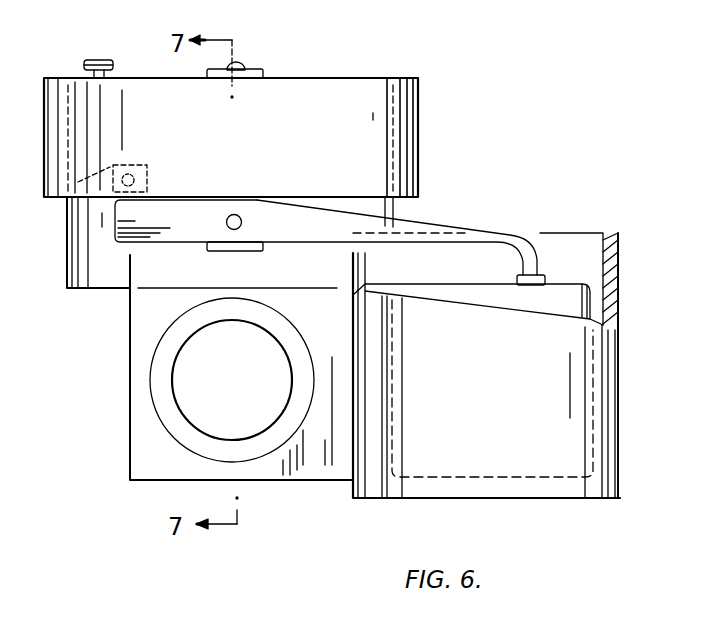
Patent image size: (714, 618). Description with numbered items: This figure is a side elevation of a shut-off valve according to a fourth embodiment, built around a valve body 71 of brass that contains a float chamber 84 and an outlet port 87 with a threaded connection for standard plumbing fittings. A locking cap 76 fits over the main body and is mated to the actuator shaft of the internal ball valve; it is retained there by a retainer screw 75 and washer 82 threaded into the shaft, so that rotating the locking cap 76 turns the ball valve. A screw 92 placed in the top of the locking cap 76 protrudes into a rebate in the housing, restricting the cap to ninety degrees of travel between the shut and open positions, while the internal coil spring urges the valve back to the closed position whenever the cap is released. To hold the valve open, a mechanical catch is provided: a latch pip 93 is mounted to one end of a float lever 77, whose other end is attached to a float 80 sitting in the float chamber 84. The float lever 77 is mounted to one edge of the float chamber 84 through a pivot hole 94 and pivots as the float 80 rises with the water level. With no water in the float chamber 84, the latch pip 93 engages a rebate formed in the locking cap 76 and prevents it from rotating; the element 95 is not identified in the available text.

The valve body 71 is at (130, 327).
The retainer screw 75 is at (240, 64).
The locking cap 76 is at (397, 143).
The float lever 77 is at (298, 230).
The float 80 is at (547, 305).
The washer 82 is at (263, 70).
The float chamber 84 is at (520, 403).
The outlet port 87 is at (180, 383).
The screw 92 is at (90, 63).
The latch pip 93 is at (150, 173).
The pivot hole 94 is at (237, 214).
The hinge 95 is at (57, 208).